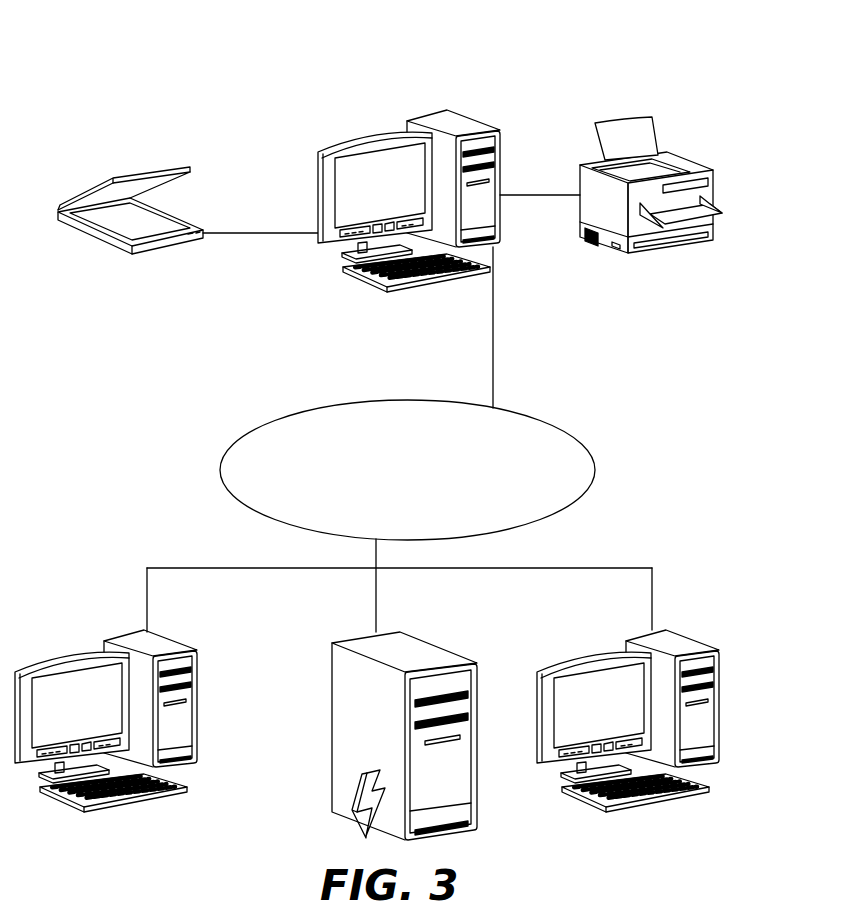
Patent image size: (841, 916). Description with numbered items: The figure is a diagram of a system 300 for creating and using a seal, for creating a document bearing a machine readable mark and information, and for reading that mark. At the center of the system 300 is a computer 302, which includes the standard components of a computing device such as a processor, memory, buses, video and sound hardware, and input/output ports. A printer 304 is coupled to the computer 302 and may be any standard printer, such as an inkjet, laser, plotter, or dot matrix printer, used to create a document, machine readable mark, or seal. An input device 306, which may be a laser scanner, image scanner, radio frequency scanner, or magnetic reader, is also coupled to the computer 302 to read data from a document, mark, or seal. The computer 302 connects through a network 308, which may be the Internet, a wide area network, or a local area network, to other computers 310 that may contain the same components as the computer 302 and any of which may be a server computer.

The system 300 is at (425, 58).
The computer 302 is at (436, 111).
The printer 304 is at (630, 116).
The input device 306 is at (172, 172).
The network 308 is at (423, 483).
The other computers 310 is at (165, 634).